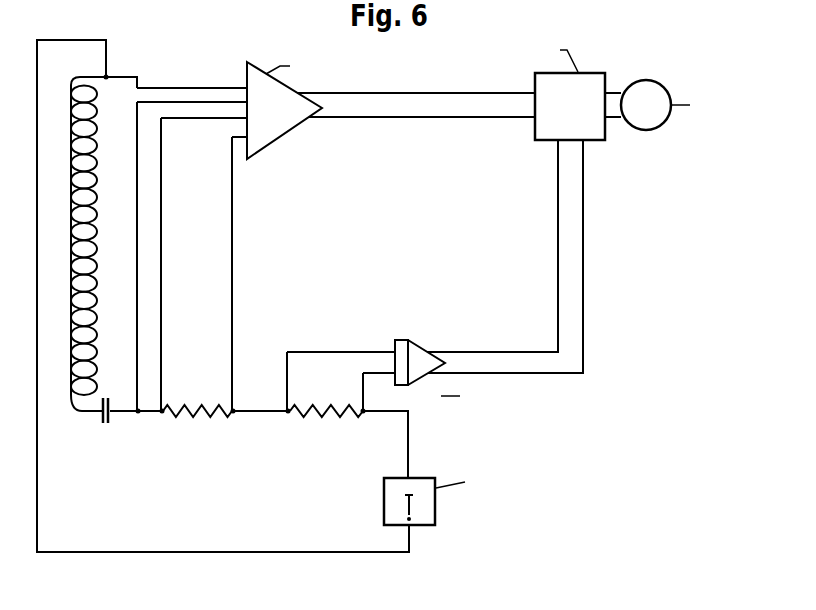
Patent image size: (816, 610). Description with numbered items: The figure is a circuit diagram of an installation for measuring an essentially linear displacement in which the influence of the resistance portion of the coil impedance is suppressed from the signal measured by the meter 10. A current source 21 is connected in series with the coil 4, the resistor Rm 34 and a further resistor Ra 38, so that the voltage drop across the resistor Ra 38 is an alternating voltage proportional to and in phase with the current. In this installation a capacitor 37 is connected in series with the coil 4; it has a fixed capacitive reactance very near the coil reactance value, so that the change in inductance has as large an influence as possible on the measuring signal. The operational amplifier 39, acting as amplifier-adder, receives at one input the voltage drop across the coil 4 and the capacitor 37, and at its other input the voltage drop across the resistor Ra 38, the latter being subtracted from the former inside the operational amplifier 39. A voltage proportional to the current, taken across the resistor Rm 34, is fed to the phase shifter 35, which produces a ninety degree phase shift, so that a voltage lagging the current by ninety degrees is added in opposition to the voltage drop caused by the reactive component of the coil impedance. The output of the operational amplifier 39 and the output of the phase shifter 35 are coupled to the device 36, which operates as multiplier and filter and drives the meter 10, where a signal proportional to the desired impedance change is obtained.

The coil 4 is at (95, 237).
The meter 10 is at (652, 122).
The current source 21 is at (428, 508).
The resistor Rm 34 is at (325, 420).
The phase shifter 35 is at (418, 371).
The multiplier and filter device 36 is at (566, 88).
The capacitor 37 is at (110, 415).
The resistor Ra 38 is at (198, 417).
The operational amplifier 39 is at (292, 119).